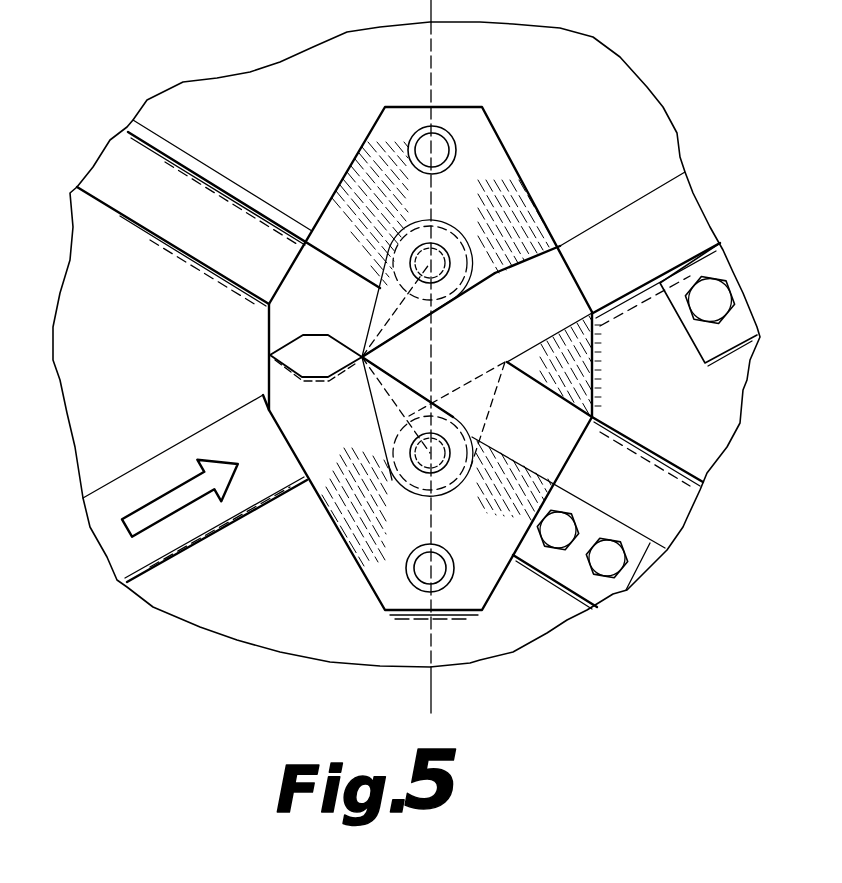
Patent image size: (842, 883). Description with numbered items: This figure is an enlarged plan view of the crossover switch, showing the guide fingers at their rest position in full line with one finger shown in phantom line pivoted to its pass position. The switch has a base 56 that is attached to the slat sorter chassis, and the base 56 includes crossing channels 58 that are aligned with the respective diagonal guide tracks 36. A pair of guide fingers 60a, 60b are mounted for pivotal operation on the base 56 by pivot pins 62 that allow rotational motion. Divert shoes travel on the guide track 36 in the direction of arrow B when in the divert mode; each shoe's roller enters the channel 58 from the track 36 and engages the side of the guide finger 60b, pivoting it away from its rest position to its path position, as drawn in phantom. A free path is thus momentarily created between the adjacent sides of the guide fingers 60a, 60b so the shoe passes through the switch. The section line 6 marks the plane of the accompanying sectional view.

The diagonal guide track 36 is at (243, 255).
The base 56 is at (477, 155).
The crossing channels 58 is at (543, 418).
The guide finger 60a is at (387, 298).
The guide finger 60b is at (382, 407).
The pivot pins 62 is at (447, 258).
The arrow B is at (163, 512).
The section line 6- 6 is at (431, 3).